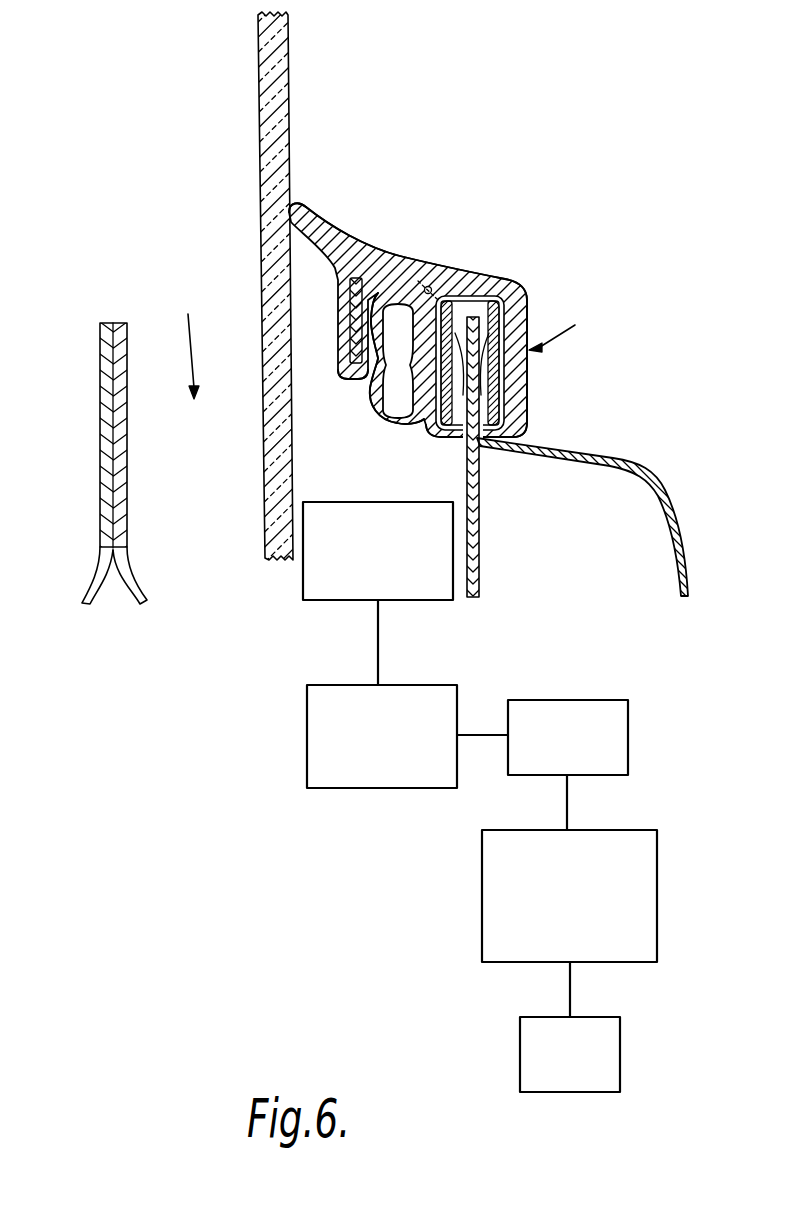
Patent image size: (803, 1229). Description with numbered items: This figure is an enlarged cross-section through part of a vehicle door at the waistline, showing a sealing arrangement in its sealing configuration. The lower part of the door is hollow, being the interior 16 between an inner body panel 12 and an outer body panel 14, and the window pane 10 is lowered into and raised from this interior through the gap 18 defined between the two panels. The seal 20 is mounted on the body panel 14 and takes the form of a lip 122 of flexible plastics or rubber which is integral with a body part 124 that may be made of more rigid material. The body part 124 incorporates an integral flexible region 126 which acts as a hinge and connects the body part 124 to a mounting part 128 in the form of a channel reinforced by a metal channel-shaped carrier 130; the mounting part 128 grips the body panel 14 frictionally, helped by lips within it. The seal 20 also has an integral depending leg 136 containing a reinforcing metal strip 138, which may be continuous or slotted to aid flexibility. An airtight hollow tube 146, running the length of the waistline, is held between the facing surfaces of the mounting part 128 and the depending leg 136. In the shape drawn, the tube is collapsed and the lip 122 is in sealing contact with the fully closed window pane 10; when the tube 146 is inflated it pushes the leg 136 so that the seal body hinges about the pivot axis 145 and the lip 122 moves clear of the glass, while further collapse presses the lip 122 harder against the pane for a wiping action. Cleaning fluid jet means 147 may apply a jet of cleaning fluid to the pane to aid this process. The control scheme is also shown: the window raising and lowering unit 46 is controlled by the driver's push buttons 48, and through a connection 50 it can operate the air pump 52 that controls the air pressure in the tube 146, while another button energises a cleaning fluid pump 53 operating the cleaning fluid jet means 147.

The window pane 10 is at (290, 110).
The inner body panel 12 is at (107, 375).
The outer body panel 14 is at (655, 478).
The interior of the lower part of the door 16 is at (293, 627).
The gap 18 is at (188, 342).
The seal 20 is at (458, 171).
The window raising and lowering unit 46 is at (610, 830).
The driver's push buttons 48 is at (576, 700).
The connection 50 is at (567, 992).
The air pump 52 is at (590, 1017).
The cleaning fluid pump 53 is at (396, 685).
The lip 122 is at (300, 212).
The body part 124 is at (500, 283).
The flexible region 126 is at (432, 270).
The mounting part 128 is at (570, 331).
The metal channel-shaped carrier 130 is at (435, 428).
The depending leg 136 is at (345, 380).
The reinforcing metal strip 138 is at (336, 318).
The pivot axis 145 is at (437, 272).
The hollow tube 146 is at (396, 423).
The cleaning fluid jet means 147 is at (455, 600).